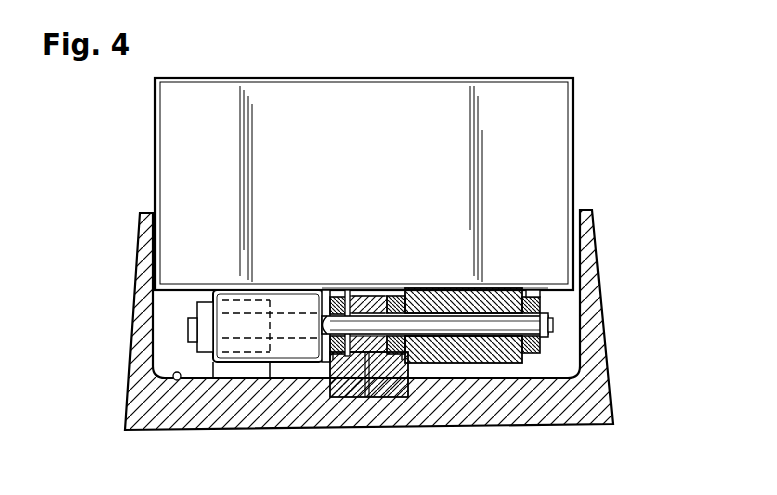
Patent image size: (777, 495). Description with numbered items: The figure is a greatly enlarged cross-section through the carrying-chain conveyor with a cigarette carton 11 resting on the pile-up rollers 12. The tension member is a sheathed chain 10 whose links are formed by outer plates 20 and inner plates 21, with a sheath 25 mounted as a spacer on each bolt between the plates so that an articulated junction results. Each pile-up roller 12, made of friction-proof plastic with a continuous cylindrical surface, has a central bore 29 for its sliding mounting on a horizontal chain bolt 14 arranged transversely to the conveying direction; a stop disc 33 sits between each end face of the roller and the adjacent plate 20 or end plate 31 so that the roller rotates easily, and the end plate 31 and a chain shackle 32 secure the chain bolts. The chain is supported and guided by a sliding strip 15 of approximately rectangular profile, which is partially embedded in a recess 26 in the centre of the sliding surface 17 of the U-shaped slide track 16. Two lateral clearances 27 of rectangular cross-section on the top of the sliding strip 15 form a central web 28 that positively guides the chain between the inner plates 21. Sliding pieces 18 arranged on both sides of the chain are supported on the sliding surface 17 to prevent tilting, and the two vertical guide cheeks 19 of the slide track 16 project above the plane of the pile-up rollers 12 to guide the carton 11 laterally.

The sheathed chain 10 is at (365, 284).
The cigarette carton 11 is at (437, 95).
The pile-up roller 12 is at (247, 355).
The chain bolt 14 is at (522, 323).
The sliding strip 15 is at (405, 378).
The slide track 16 is at (575, 400).
The sliding surface 17 is at (176, 381).
The sliding piece 18 is at (228, 368).
The guide cheek 19 is at (147, 248).
The outer plate 20 is at (333, 290).
The inner plate 21 is at (347, 290).
The sheath 25 is at (376, 298).
The recess 26 is at (336, 398).
The clearance 27 is at (332, 352).
The web 28 is at (367, 388).
The central bore 29 is at (446, 298).
The end plate 31 is at (535, 294).
The chain shackle 32 is at (543, 307).
The stop disc 33 is at (401, 352).